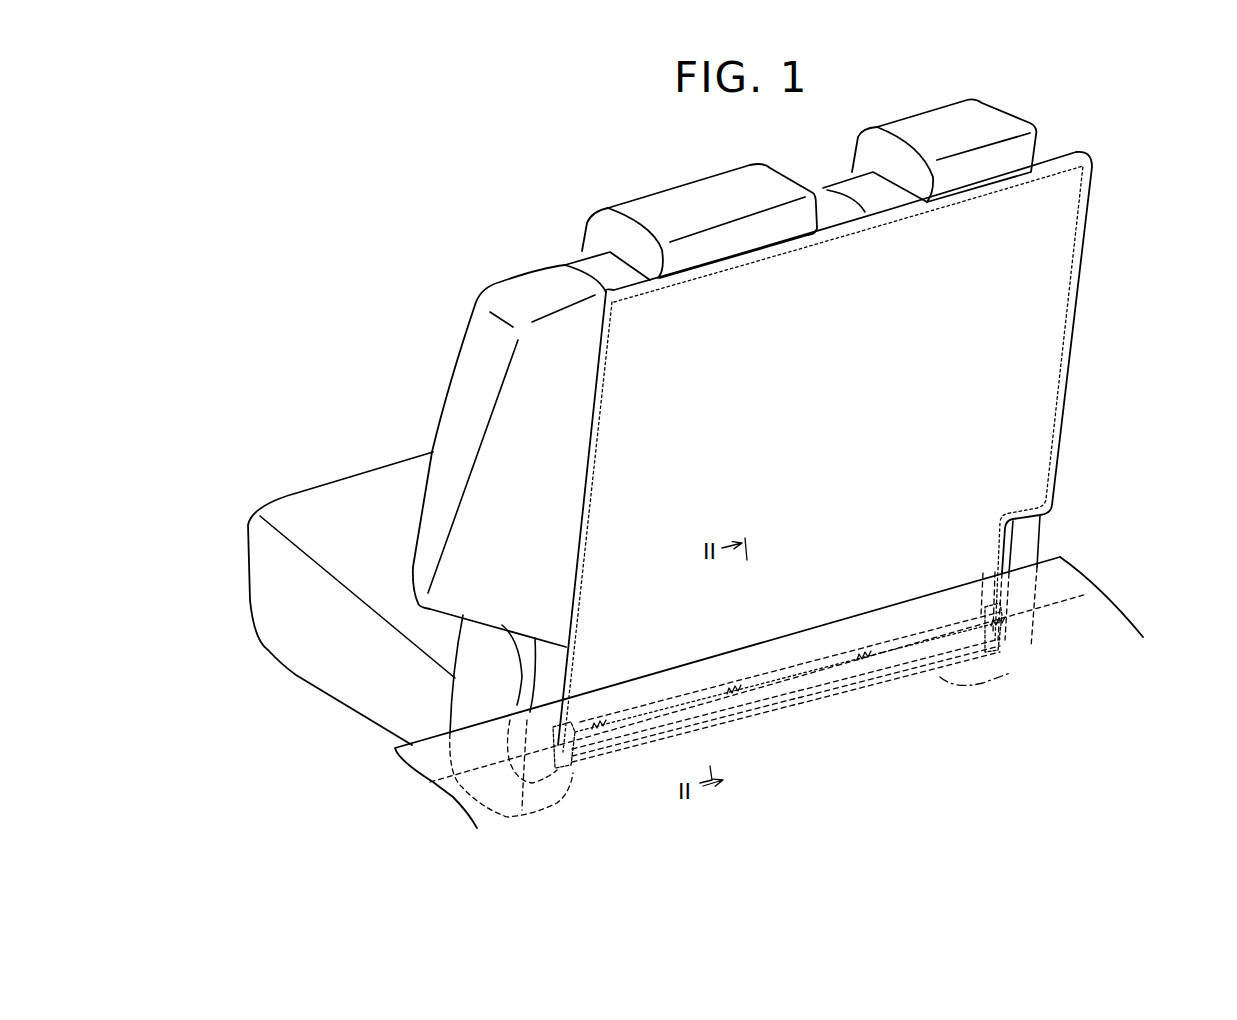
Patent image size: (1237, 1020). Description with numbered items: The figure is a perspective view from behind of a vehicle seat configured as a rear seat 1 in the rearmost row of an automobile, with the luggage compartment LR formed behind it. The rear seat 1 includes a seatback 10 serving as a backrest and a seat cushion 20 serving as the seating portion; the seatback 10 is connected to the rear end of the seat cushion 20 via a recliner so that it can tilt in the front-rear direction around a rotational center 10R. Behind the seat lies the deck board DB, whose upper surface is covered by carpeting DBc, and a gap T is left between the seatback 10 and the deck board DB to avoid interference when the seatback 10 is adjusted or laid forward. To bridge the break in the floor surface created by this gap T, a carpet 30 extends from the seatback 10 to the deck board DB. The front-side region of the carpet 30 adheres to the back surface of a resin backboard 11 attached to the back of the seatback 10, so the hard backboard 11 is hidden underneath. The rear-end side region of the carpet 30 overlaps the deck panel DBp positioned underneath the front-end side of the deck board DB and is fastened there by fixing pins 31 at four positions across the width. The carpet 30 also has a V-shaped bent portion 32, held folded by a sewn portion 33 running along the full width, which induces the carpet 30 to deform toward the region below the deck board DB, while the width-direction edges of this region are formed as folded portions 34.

The rear seat 1 is at (405, 231).
The seatback 10 is at (471, 353).
The rotational center 10R is at (480, 661).
The resin backboard 11 is at (1003, 289).
The seat cushion 20 is at (286, 582).
The carpet 30 is at (1002, 339).
The fixing pins 31 is at (601, 733).
The bent portion 32 is at (788, 698).
The sewn portion 33 is at (786, 687).
The folded portions 34 is at (578, 760).
The deck board DB is at (1115, 639).
The deck panel DBp is at (1087, 610).
The carpeting DBc is at (1113, 624).
The luggage compartment LR is at (1100, 445).
The gap T is at (630, 701).